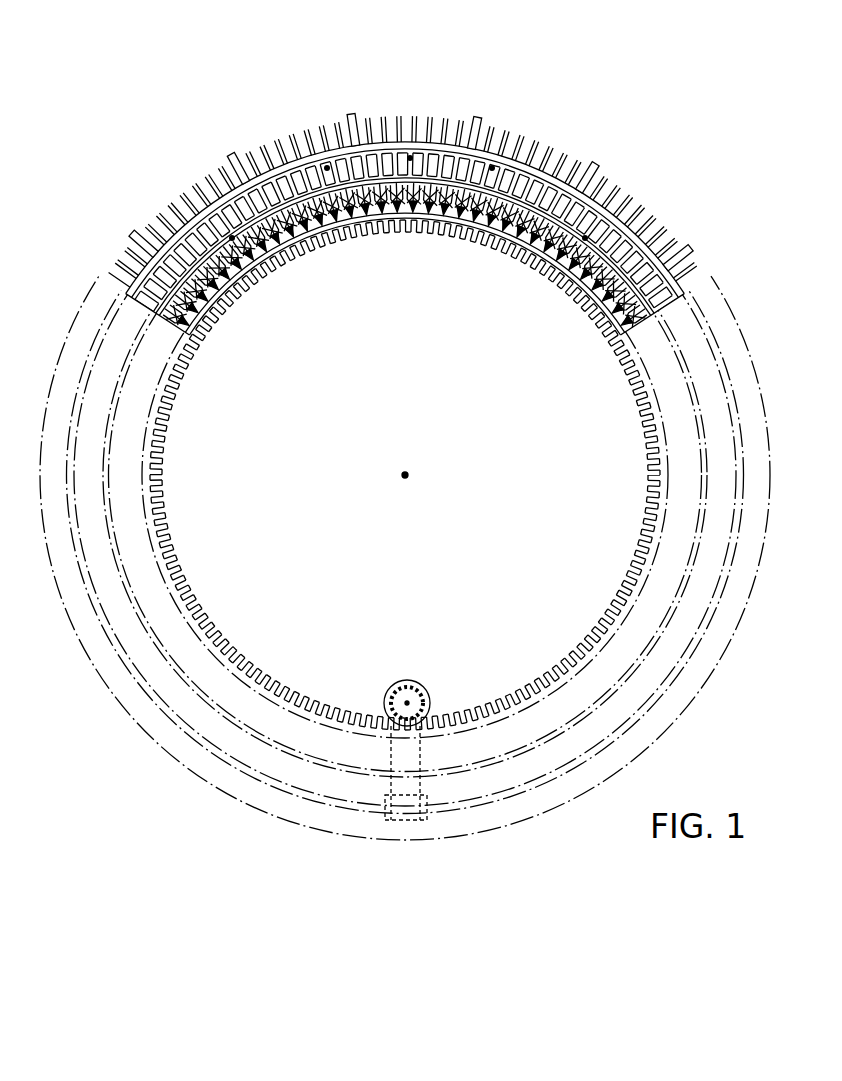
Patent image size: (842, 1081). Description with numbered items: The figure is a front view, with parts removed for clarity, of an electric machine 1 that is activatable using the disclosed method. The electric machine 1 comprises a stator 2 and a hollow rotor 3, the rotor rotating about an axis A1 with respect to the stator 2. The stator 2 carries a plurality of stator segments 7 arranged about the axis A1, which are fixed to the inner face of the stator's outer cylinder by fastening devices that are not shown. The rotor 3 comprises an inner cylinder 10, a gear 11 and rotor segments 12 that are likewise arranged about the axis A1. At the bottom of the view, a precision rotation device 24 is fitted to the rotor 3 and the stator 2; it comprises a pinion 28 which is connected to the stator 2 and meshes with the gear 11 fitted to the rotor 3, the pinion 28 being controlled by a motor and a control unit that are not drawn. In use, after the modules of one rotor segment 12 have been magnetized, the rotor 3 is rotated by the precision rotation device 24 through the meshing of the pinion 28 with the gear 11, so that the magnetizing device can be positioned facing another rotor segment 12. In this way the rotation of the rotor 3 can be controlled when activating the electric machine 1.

The electric machine 1 is at (150, 805).
The stator 2 is at (396, 173).
The hollow rotor 3 is at (405, 471).
The stator segments 7 is at (150, 282).
The inner cylinder 10 is at (270, 260).
The gear 11 is at (166, 464).
The rotor segments 12 is at (328, 214).
The precision rotation device 24 is at (425, 725).
The pinion 28 is at (398, 684).
The axis A1 is at (412, 470).